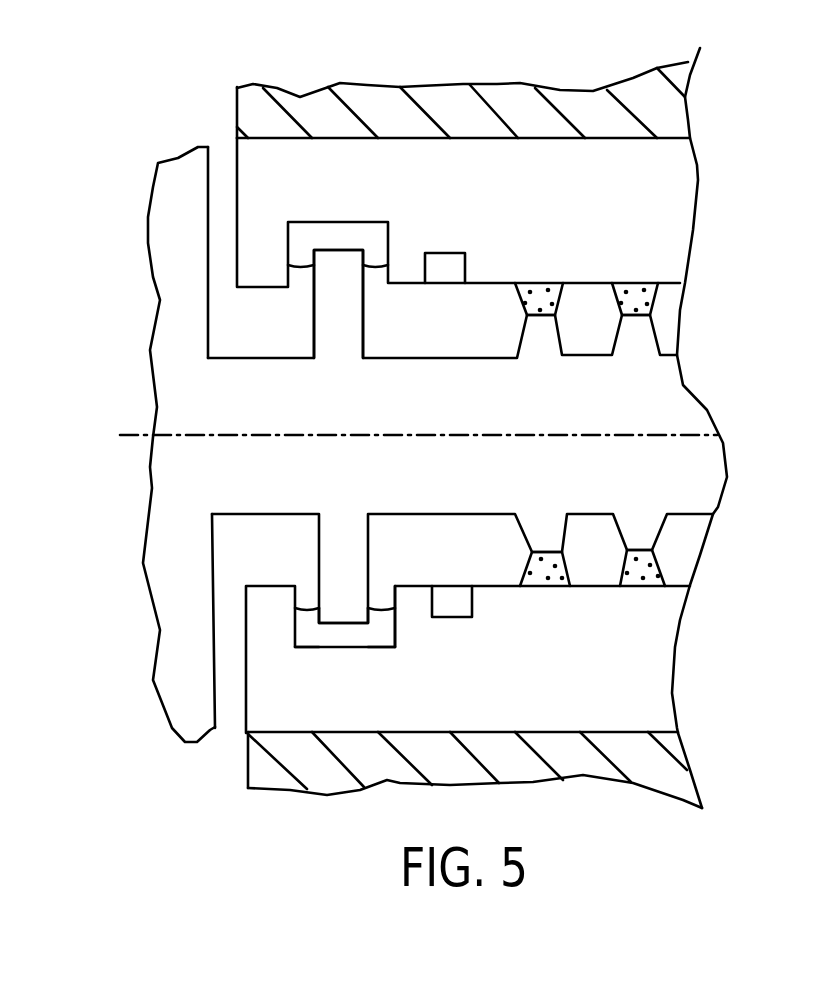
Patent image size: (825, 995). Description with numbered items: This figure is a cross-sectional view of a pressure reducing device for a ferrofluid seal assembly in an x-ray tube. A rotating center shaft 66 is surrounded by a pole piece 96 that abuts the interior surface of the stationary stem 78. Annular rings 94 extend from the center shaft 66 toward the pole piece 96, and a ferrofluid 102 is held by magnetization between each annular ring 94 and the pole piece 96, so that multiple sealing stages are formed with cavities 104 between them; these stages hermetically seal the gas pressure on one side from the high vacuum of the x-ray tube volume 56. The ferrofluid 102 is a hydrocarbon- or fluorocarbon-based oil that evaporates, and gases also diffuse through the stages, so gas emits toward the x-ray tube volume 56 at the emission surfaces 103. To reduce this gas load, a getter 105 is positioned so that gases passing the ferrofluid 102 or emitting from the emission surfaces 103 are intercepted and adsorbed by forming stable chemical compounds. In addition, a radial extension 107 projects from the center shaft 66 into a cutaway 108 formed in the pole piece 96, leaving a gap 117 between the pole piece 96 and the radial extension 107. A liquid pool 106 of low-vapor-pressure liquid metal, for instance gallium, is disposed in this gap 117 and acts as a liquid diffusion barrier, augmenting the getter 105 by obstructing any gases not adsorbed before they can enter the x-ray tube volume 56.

The x-ray tube volume 56 is at (85, 381).
The center shaft 66 is at (692, 433).
The stem 78 is at (518, 97).
The annular rings 94 is at (523, 340).
The pole piece 96 is at (640, 147).
The ferrofluid 102 is at (724, 248).
The emission surfaces 103 is at (517, 302).
The cavities 104 is at (675, 533).
The getter 105 is at (455, 253).
The liquid pool 106 is at (397, 620).
The radial extension 107 is at (343, 603).
The cutaway 108 is at (373, 652).
The gap 117 is at (307, 635).